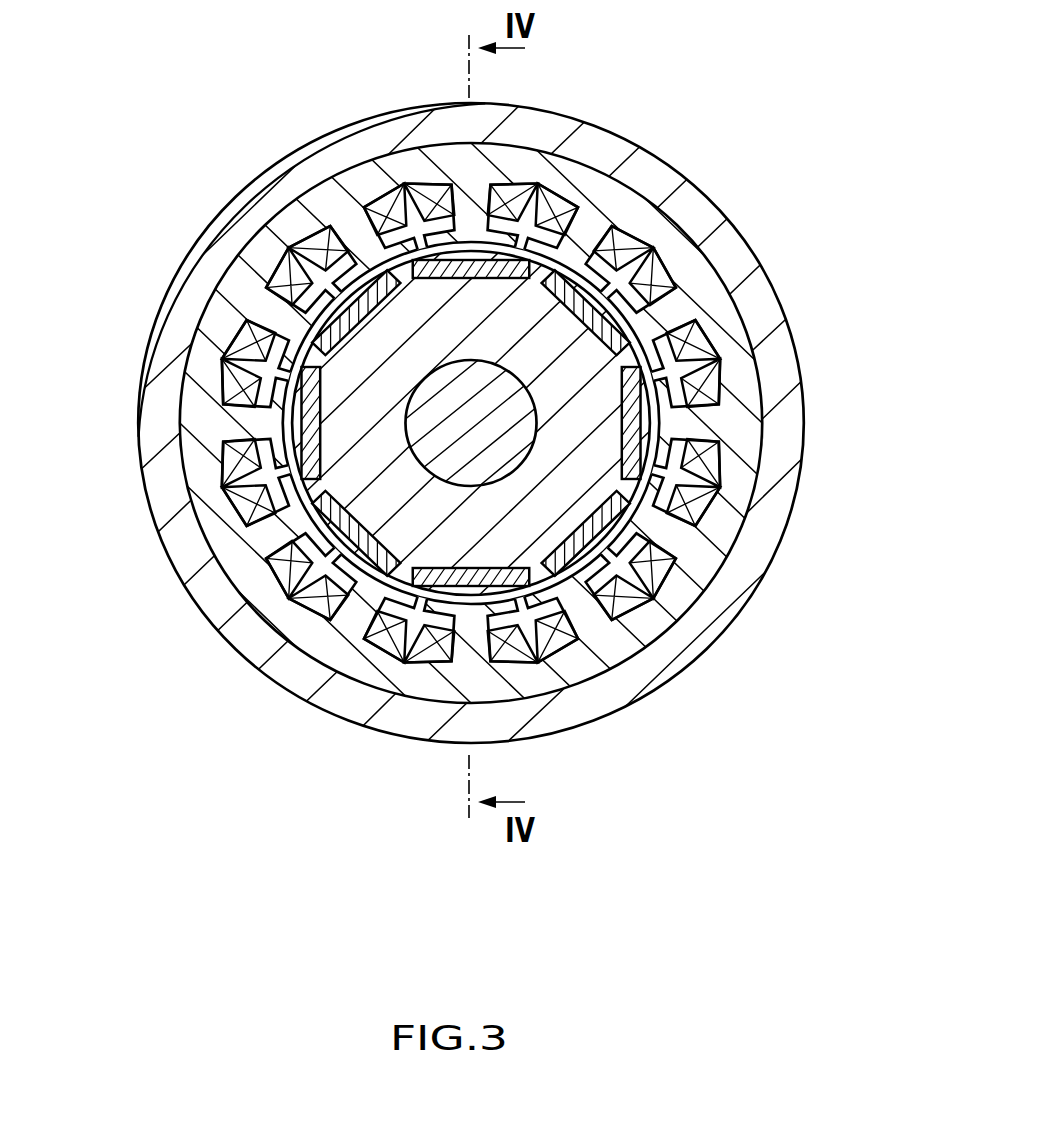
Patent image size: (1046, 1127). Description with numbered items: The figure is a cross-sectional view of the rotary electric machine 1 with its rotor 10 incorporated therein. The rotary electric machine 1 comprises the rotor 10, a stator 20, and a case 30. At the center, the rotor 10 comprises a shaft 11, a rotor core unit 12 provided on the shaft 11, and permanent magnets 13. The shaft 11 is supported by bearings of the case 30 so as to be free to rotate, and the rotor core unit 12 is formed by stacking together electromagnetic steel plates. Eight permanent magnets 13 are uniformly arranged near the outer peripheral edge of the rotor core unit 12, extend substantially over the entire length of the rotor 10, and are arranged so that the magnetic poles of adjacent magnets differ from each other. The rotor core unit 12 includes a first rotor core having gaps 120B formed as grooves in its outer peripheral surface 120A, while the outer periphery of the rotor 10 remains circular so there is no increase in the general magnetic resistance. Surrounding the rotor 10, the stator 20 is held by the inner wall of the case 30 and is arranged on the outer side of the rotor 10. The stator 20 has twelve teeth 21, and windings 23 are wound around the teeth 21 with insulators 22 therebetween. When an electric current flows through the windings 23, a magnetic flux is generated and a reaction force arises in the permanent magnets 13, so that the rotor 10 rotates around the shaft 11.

The rotary electric machine 1 is at (451, 384).
The rotor 10 is at (499, 389).
The shaft 11 is at (432, 457).
The rotor core unit 12 is at (500, 537).
The permanent magnets 13 is at (615, 445).
The stator 20 is at (402, 423).
The teeth 21 is at (273, 535).
The insulators 22 is at (198, 275).
The windings 23 is at (227, 342).
The case 30 is at (423, 423).
The outer peripheral surface 120A is at (605, 295).
The gaps 120B is at (573, 263).